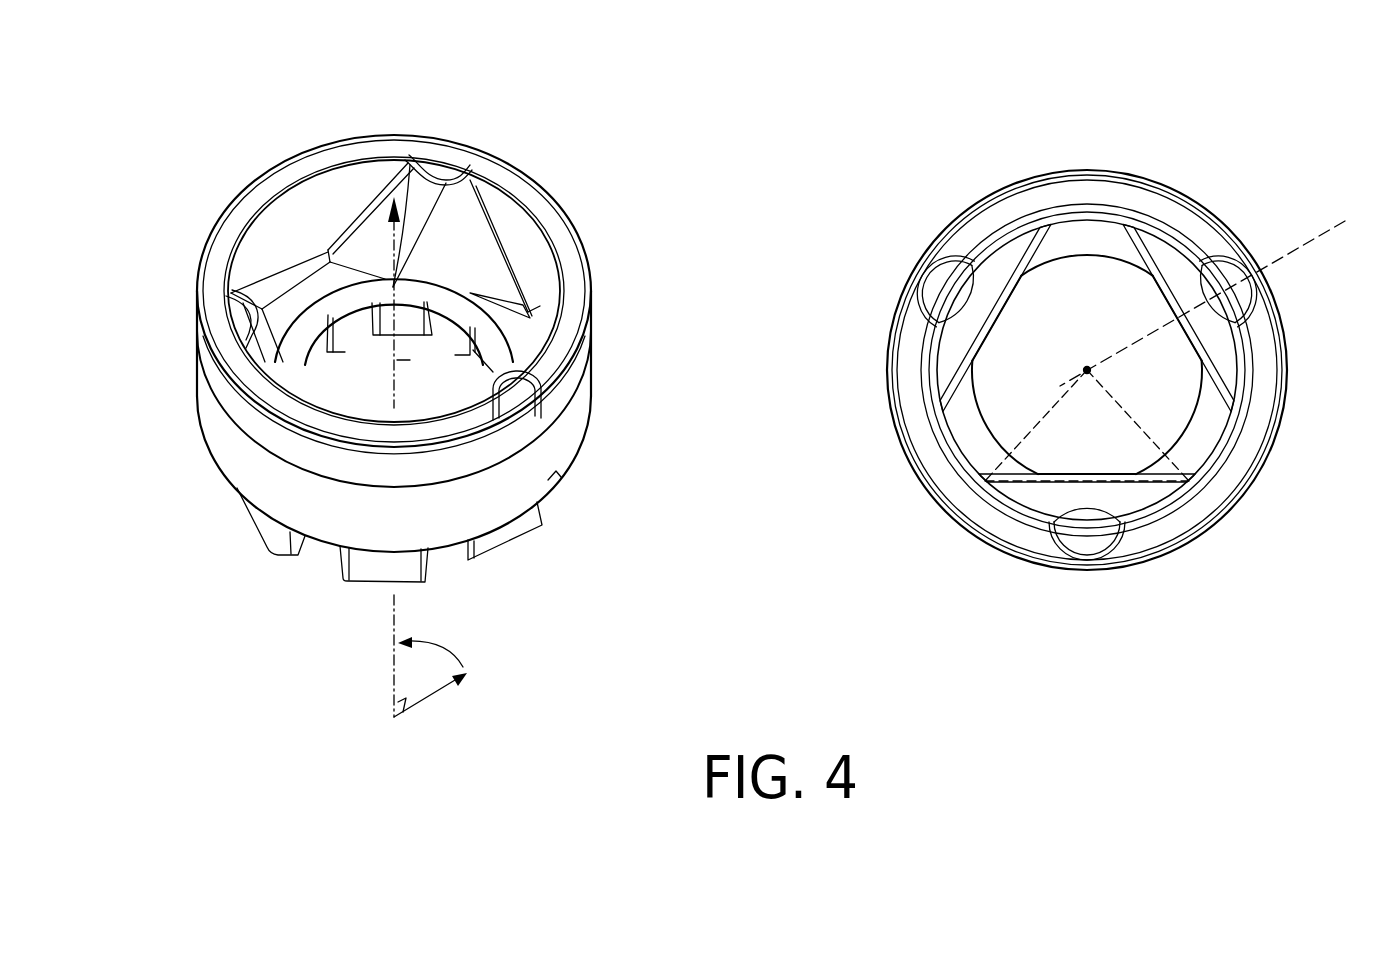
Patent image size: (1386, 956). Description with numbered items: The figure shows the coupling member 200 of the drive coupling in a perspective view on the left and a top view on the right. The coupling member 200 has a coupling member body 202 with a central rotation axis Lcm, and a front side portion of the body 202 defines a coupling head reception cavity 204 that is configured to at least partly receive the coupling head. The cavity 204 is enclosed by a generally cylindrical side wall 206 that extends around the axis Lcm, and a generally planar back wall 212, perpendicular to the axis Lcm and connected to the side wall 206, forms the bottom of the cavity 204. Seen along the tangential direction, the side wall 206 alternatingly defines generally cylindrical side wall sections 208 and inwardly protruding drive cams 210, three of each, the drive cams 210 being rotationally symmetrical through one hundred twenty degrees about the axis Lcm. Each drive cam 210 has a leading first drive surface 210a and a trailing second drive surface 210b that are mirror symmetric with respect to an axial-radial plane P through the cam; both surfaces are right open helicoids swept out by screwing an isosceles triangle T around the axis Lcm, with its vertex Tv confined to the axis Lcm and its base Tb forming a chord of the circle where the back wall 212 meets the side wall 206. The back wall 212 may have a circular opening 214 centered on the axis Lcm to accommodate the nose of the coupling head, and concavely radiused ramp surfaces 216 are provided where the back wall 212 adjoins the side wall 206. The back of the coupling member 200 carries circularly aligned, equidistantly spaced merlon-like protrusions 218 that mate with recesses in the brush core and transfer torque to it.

The coupling member 200 is at (202, 197).
The coupling member body 202 is at (553, 392).
The coupling head reception cavity 204 is at (338, 380).
The side wall 206 is at (288, 245).
The generally cylindrical section of side wall 208 is at (322, 198).
The drive cam 210 is at (437, 195).
The leading first drive surface 210a is at (474, 225).
The trailing second drive surface 210b is at (375, 225).
The back wall 212 is at (513, 335).
The central opening in back wall 214 is at (1188, 361).
The concavely radiused ramp 216 is at (293, 278).
The attachment protrusions 218 is at (270, 525).
The rotation axis of coupling member Lcm is at (1086, 367).
The isosceles triangle T is at (1045, 415).
The vertex of isosceles triangle Tv is at (1092, 373).
The base of isosceles triangle Tb is at (1027, 482).
The radial-axial plane of symmetry through drive cam P is at (1345, 220).